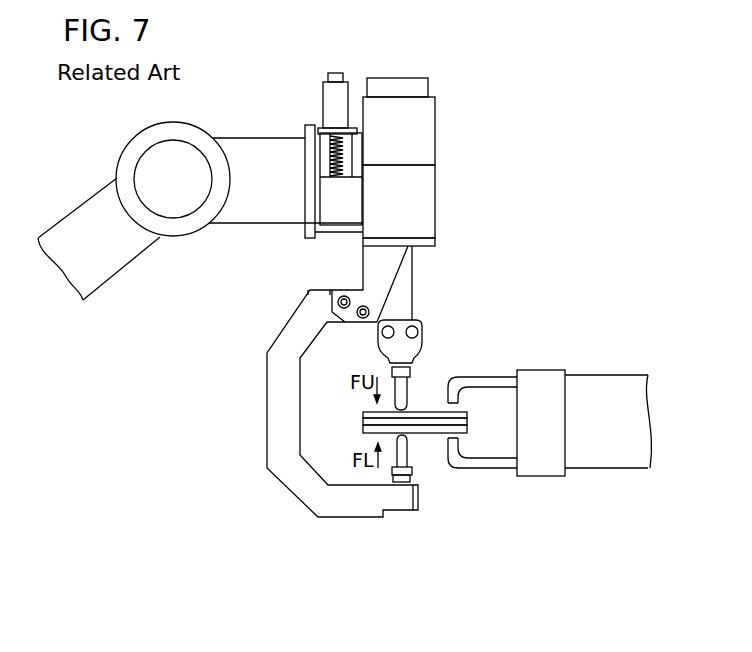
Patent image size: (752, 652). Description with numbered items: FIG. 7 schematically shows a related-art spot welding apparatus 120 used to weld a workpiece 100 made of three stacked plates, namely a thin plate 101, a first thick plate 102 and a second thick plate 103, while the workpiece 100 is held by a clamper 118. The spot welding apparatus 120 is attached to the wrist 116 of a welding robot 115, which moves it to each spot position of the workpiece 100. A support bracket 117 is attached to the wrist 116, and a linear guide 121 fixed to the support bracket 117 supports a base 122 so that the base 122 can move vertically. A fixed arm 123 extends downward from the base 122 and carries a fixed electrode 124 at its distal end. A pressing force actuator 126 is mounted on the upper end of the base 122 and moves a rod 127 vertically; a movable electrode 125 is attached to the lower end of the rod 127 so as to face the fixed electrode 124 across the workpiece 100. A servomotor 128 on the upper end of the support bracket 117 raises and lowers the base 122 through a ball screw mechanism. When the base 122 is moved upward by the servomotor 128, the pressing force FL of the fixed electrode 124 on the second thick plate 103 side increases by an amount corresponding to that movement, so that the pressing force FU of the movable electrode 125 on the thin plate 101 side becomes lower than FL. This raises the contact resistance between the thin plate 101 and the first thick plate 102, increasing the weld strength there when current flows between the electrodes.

The workpiece 100 is at (394, 458).
The thin plate 101 is at (363, 413).
The first thick plate 102 is at (363, 420).
The second thick plate 103 is at (363, 430).
The welding robot 115 is at (70, 185).
The wrist 116 is at (233, 148).
The support bracket 117 is at (303, 227).
The clamper 118 is at (543, 470).
The spot welding apparatus 120 is at (448, 131).
The linear guide 121 is at (318, 127).
The base 122 is at (425, 200).
The fixed arm 123 is at (275, 403).
The fixed electrode 124 is at (410, 452).
The movable electrode 125 is at (407, 390).
The pressing force actuator 126 is at (425, 128).
The rod 127 is at (403, 285).
The servomotor 128 is at (327, 95).